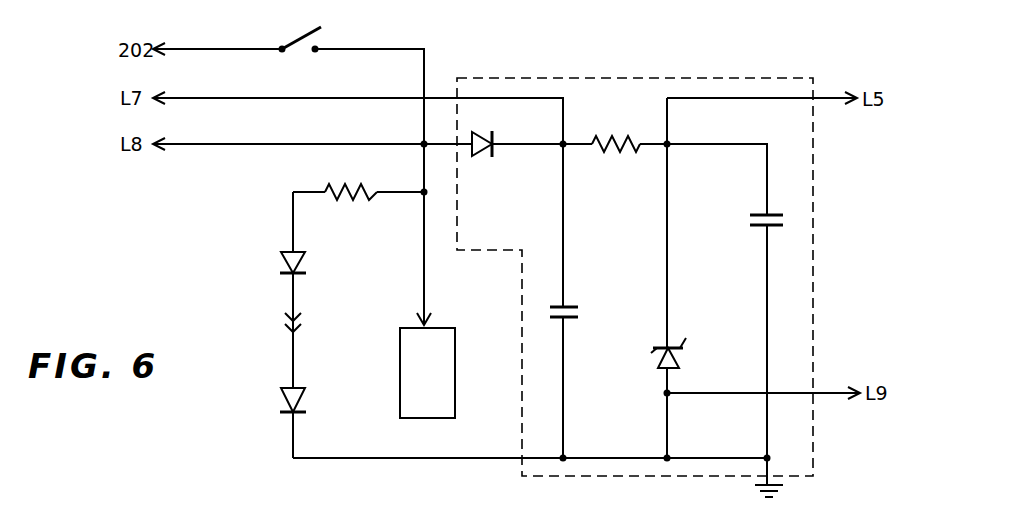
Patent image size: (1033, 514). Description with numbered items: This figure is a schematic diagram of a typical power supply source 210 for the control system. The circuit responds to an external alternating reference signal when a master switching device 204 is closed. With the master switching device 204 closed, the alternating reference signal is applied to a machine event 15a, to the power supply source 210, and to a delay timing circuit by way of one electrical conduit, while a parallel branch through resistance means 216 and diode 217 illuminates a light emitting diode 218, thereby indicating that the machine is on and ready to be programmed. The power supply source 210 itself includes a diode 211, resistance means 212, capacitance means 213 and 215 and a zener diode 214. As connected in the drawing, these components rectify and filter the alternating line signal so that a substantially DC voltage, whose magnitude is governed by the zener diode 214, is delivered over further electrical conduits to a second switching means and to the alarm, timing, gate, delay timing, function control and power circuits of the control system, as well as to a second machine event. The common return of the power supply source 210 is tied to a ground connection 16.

The master switching device 204 is at (292, 44).
The power supply source 210 is at (765, 77).
The diode 211 is at (483, 155).
The resistance means 212 is at (608, 148).
The capacitance means 213 is at (755, 212).
The zener diode 214 is at (678, 358).
The capacitance means 215 is at (568, 306).
The resistance means 216 is at (335, 187).
The diode 217 is at (283, 269).
The light emitting diode 218 is at (281, 392).
The machine event 15a is at (444, 386).
The ground 16 is at (775, 499).